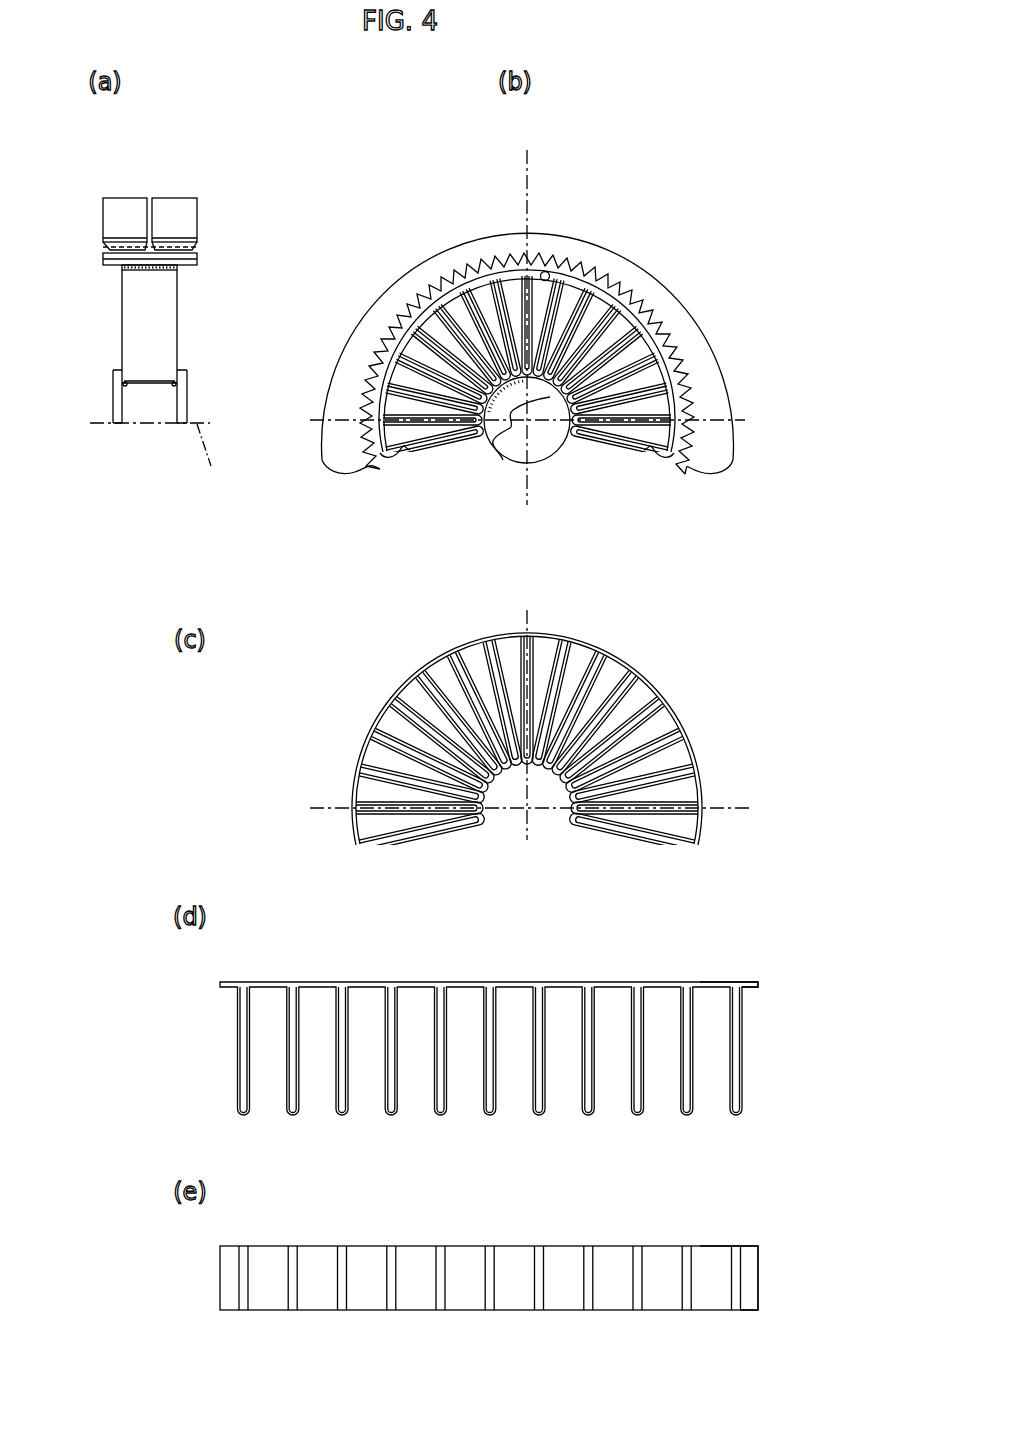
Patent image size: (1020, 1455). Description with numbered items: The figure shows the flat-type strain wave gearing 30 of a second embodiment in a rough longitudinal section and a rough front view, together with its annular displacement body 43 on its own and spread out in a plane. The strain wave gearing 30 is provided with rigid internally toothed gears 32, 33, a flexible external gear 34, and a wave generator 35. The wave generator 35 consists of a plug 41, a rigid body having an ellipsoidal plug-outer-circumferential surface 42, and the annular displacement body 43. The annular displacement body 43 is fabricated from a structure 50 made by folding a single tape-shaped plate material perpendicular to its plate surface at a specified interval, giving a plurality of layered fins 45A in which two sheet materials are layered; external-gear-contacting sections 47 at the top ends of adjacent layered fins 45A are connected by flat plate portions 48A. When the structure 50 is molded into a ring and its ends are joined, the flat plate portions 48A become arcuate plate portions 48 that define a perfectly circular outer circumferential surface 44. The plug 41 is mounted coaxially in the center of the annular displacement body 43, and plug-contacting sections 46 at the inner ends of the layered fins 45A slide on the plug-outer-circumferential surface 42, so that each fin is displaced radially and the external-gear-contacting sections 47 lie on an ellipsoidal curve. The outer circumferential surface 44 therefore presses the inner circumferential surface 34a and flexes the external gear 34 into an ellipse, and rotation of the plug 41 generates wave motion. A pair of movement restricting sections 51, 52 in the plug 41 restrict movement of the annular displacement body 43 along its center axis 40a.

The strain wave gearing 30 is at (225, 168).
The rigid internally toothed gear 32 is at (199, 211).
The rigid internally toothed gear 33 is at (101, 214).
The flexible external gear 34 is at (101, 261).
The inner circumferential surface 34a is at (545, 271).
The wave generator 35 is at (100, 287).
The center axis 40a is at (215, 460).
The plug 41 is at (112, 408).
The plug-outer-circumferential surface 42 is at (160, 380).
The annular displacement body 43 is at (110, 319).
The outer circumferential surface 44 is at (588, 264).
The layered fin 45A is at (138, 335).
The plug-contacting section 46 is at (145, 378).
The external-gear-contacting section 47 is at (636, 303).
The arcuate plate portion 48 is at (637, 663).
The flat plate portion 48A is at (712, 982).
The structure 50 is at (800, 983).
The movement restricting section 51 is at (112, 372).
The movement restricting section 52 is at (180, 397).